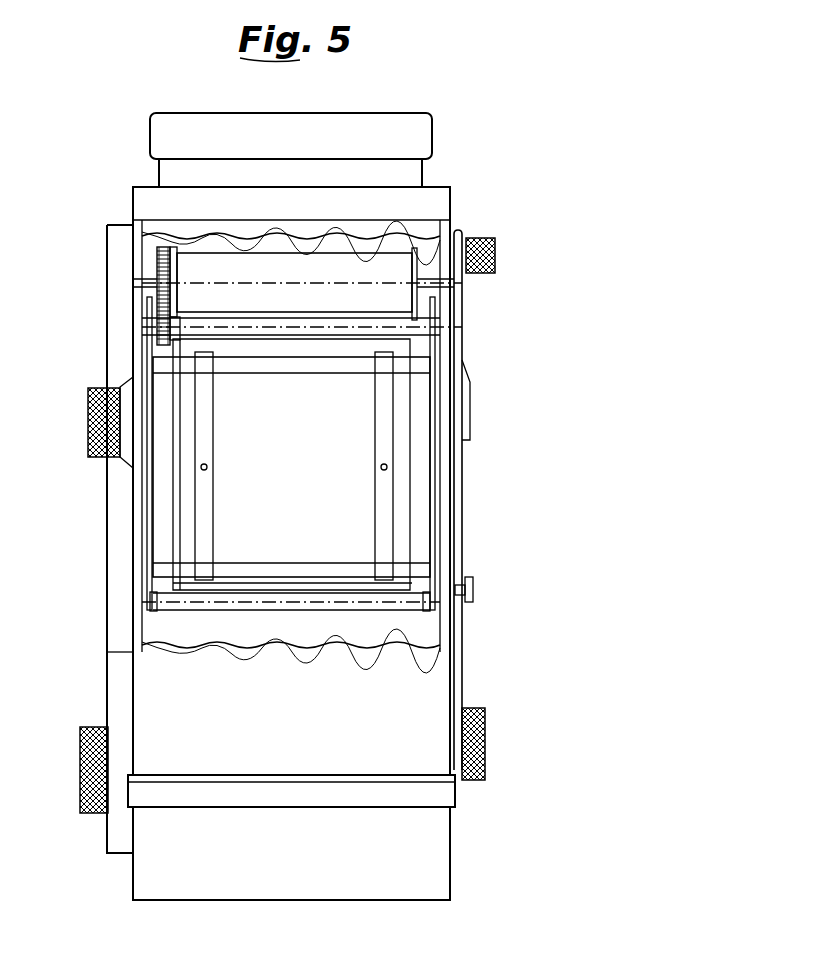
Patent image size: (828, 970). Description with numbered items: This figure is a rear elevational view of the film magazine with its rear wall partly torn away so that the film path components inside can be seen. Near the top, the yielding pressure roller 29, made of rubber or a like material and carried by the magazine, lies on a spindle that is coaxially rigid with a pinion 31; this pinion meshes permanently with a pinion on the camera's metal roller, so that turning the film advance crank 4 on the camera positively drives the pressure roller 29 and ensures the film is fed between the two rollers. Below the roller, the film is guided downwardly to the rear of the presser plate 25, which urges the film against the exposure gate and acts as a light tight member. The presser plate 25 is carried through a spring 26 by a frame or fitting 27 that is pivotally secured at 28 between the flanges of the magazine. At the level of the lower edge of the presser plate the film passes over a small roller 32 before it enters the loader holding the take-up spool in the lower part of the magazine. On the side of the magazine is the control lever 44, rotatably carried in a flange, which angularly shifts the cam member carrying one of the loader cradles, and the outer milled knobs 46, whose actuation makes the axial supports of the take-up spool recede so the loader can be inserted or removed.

The film advance crank 4 is at (458, 306).
The presser plate 25 is at (360, 525).
The spring 26 is at (385, 493).
The frame or fitting 27 is at (433, 456).
The pivot 28 is at (162, 328).
The pressure roller 29 is at (398, 262).
The pinion 31 is at (162, 270).
The small roller 32 is at (178, 606).
The control lever 44 is at (458, 621).
The milled knobs 46 is at (487, 752).